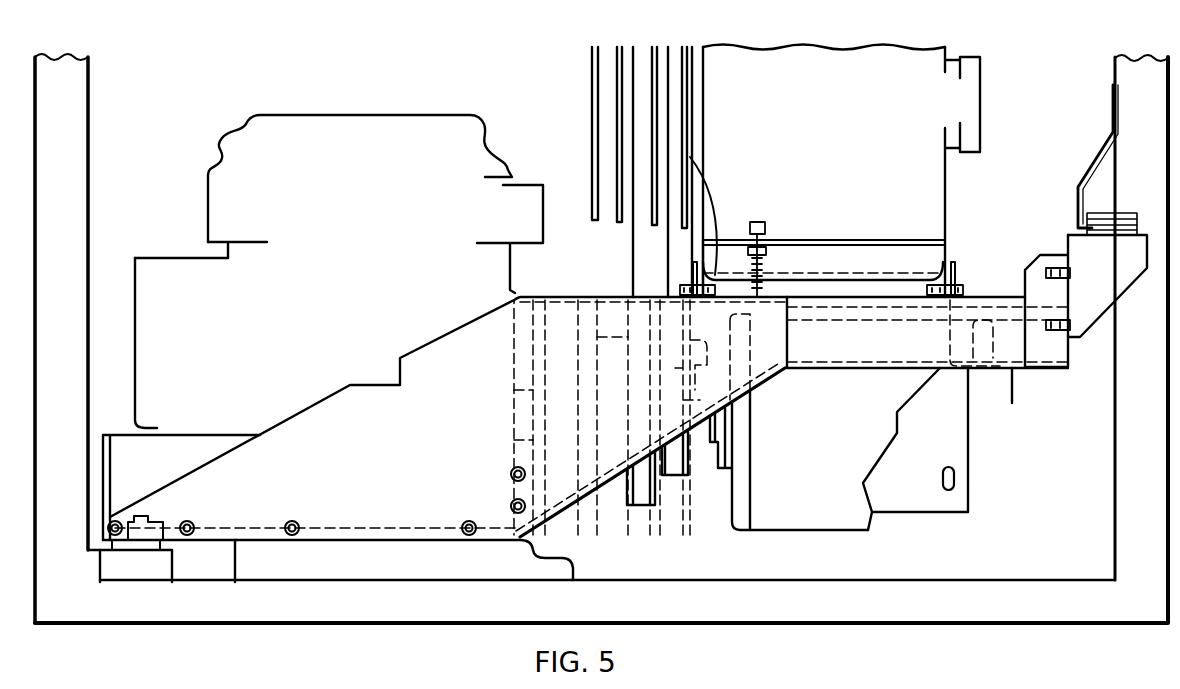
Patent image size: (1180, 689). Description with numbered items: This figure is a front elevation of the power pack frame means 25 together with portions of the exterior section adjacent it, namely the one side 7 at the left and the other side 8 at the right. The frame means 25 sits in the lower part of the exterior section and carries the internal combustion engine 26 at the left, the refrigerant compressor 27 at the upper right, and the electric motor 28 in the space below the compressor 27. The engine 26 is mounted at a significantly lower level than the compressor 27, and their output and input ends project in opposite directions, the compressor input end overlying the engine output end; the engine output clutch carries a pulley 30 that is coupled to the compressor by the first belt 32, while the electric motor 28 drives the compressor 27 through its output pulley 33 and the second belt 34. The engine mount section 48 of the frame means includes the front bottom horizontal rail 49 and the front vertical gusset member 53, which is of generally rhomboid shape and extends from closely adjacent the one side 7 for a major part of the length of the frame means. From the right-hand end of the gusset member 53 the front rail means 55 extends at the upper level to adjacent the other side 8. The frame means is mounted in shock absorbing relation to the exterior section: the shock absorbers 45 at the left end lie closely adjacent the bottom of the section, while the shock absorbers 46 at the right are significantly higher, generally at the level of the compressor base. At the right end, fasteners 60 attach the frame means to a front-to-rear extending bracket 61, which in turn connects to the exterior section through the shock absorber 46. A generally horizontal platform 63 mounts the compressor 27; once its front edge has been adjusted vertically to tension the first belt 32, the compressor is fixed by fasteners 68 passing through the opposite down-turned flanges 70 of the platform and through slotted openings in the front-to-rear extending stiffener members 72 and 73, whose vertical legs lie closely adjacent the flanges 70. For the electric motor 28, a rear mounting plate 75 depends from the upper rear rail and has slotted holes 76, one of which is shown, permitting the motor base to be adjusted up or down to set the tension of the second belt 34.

The one side 7 is at (83, 123).
The other side 8 is at (1125, 70).
The power pack frame means 25 is at (606, 308).
The internal combustion engine 26 is at (347, 120).
The refrigerant compressor 27 is at (818, 62).
The electric motor 28 is at (795, 520).
The pulley 30 is at (658, 506).
The first belt 32 is at (648, 98).
The output pulley 33 is at (690, 477).
The second belt 34 is at (678, 140).
The shock absorbers 45 is at (165, 541).
The shock absorbers 46 is at (1077, 230).
The engine mount section 48 is at (377, 518).
The front bottom horizontal rail 49 is at (120, 436).
The front vertical gusset member 53 is at (447, 417).
The front rail means 55 is at (833, 357).
The fasteners 60 is at (1075, 273).
The bracket 61 is at (1100, 270).
The platform 63 is at (945, 248).
The fasteners 68 is at (706, 285).
The down-turned flanges 70 is at (945, 307).
The stiffener member 72 is at (712, 417).
The stiffener member 73 is at (948, 343).
The rear mounting plate 75 is at (908, 512).
The slotted holes 76 is at (955, 483).